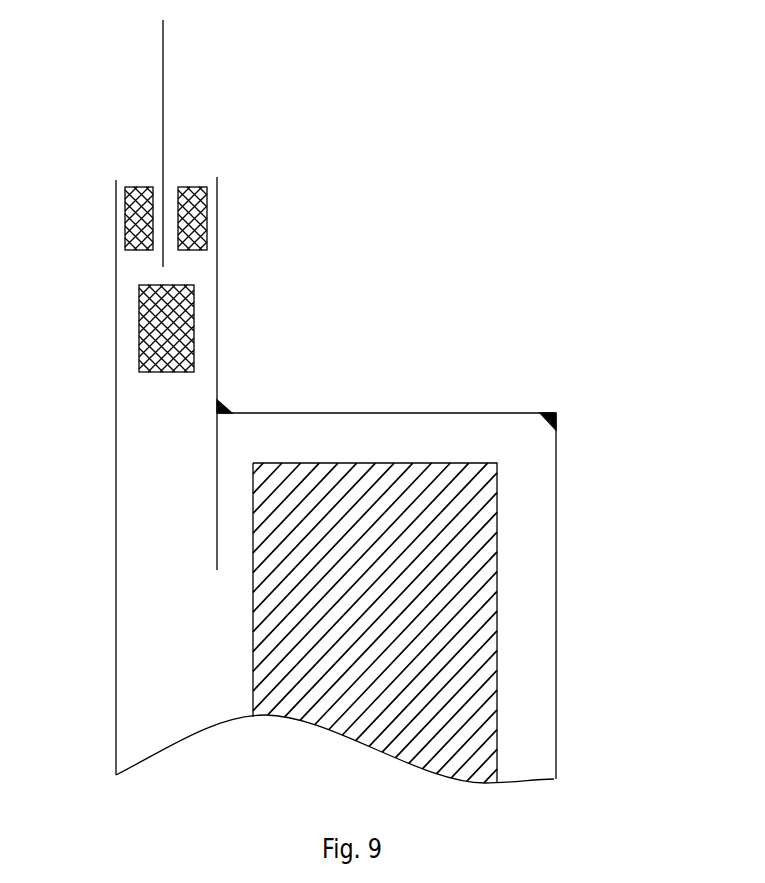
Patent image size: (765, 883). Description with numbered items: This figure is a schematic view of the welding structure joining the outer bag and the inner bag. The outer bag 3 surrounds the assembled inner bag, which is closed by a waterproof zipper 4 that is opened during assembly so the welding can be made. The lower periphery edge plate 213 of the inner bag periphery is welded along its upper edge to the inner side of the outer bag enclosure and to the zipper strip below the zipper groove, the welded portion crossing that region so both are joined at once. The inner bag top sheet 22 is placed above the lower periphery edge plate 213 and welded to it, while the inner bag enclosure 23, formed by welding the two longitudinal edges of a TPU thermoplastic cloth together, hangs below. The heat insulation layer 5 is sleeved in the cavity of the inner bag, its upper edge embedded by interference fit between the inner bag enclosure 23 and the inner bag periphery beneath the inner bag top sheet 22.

The outer bag 3 is at (117, 357).
The waterproof zipper 4 is at (163, 80).
The heat insulation layer 5 is at (480, 523).
The inner bag top sheet 22 is at (375, 413).
The inner bag enclosure 23 is at (557, 624).
The lower periphery edge plate 213 is at (217, 273).